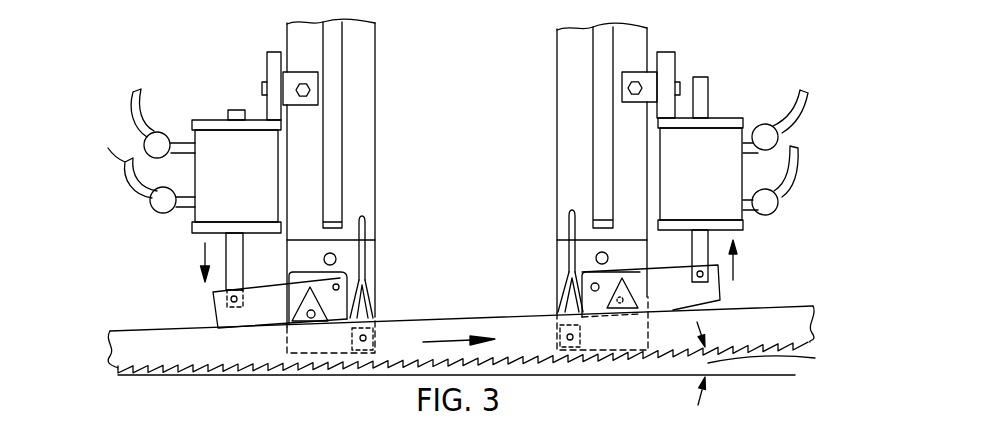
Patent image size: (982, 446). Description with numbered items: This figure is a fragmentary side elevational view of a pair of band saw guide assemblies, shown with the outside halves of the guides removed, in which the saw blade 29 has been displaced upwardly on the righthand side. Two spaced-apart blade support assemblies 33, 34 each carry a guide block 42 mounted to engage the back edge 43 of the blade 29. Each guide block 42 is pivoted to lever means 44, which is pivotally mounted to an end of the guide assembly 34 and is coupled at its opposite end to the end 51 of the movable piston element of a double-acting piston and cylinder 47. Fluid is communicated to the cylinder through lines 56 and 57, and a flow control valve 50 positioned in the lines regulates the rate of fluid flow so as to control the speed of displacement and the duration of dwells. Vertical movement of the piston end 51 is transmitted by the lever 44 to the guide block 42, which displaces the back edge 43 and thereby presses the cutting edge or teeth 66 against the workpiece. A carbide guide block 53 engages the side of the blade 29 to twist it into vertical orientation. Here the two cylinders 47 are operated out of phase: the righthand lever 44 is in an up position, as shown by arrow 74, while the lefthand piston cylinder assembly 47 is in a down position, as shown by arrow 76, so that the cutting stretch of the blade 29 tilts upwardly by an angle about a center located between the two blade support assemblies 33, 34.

The saw blade 29 is at (797, 320).
The blade support assembly 33 is at (383, 162).
The guide assembly 34 is at (543, 178).
The guide block 42 is at (320, 308).
The back edge 43 is at (468, 318).
The lever means 44 is at (223, 313).
The piston and cylinder 47 is at (220, 146).
The flow control valve 50 is at (164, 133).
The end of movable piston element 51 is at (230, 274).
The guide block 53 is at (558, 335).
The line 56 is at (133, 92).
The line 57 is at (795, 163).
The cutting edge 66 is at (337, 376).
The arrow 74 is at (736, 262).
The arrow 76 is at (205, 255).